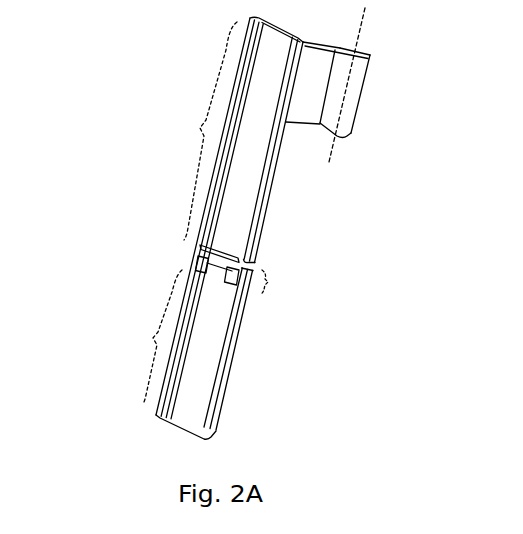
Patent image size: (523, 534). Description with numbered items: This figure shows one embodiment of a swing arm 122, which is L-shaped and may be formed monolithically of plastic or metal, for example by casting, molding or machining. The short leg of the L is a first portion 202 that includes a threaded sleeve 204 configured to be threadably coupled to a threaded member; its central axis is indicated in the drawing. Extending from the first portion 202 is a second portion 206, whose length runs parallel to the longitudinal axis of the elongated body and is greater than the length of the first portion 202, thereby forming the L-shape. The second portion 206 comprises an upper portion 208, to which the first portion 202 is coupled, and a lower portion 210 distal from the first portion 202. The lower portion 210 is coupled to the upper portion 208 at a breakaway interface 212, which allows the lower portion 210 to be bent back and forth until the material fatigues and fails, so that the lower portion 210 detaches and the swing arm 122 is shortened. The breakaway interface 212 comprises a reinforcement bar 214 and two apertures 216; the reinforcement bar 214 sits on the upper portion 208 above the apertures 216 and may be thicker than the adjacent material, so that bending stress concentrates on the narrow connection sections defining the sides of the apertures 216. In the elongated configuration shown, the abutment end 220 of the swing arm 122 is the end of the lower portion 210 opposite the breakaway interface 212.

The swing arm 122 is at (140, 70).
The first portion 202 is at (353, 93).
The threaded sleeve 204 is at (370, 52).
The second portion 206 is at (245, 203).
The upper portion 208 is at (186, 131).
The lower portion 210 is at (173, 349).
The breakaway interface 212 is at (262, 282).
The reinforcement bar 214 is at (210, 250).
The apertures 216 is at (197, 264).
The abutment end 220 is at (173, 422).